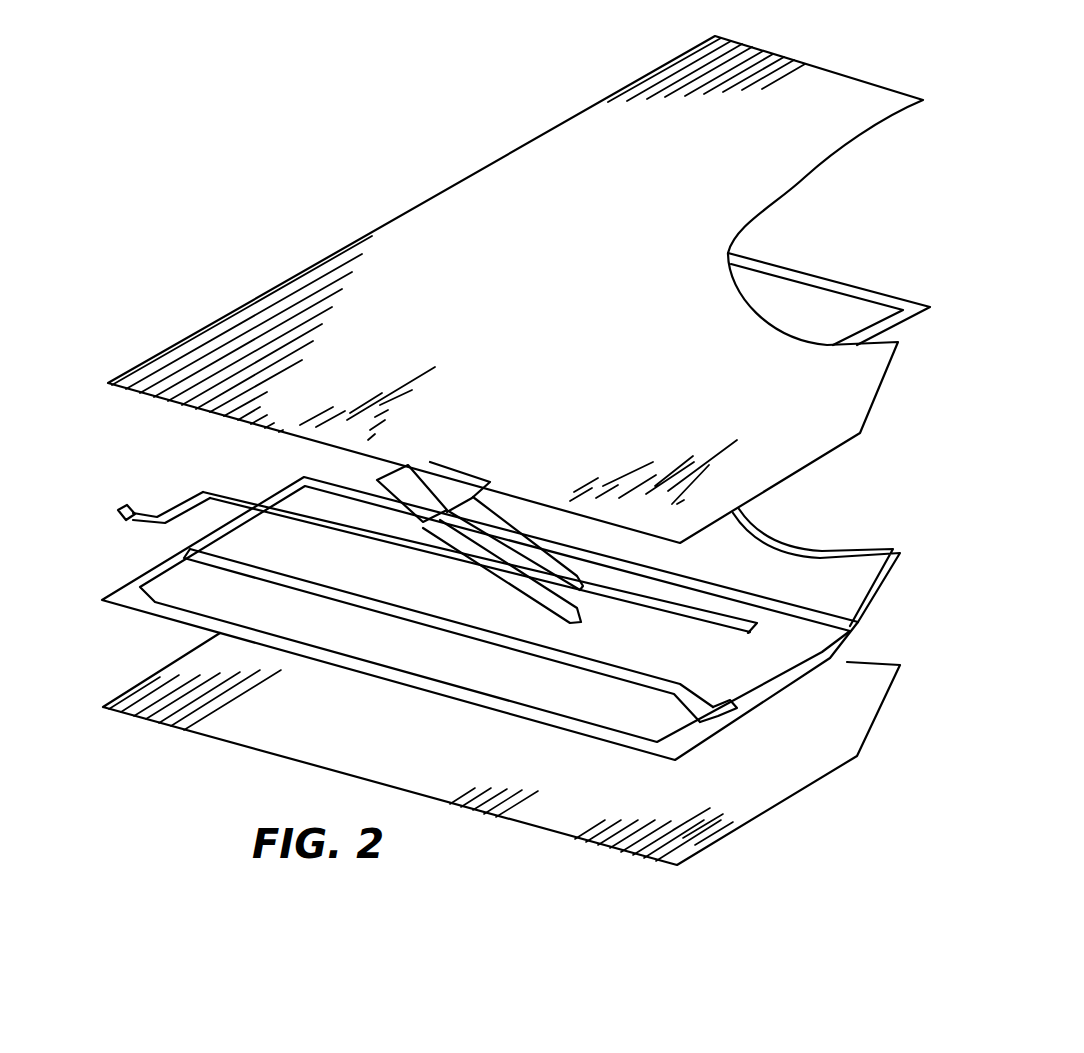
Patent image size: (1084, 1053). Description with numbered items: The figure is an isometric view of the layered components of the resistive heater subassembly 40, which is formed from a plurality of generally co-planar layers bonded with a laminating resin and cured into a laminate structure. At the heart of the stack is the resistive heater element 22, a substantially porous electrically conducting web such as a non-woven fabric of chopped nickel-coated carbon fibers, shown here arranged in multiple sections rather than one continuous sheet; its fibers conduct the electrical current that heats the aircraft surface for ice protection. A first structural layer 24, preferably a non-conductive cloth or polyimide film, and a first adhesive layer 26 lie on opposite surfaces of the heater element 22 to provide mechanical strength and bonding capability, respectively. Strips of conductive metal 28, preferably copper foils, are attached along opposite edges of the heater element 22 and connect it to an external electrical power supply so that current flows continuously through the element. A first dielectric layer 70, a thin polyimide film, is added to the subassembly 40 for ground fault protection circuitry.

The resistive heater subassembly 40 is at (370, 150).
The first structural layer 24 is at (857, 75).
The first adhesive layer 26 is at (150, 618).
The resistive heater element 22 is at (243, 545).
The strip of conductive metal 28 is at (118, 510).
The first dielectric layer 70 is at (755, 820).